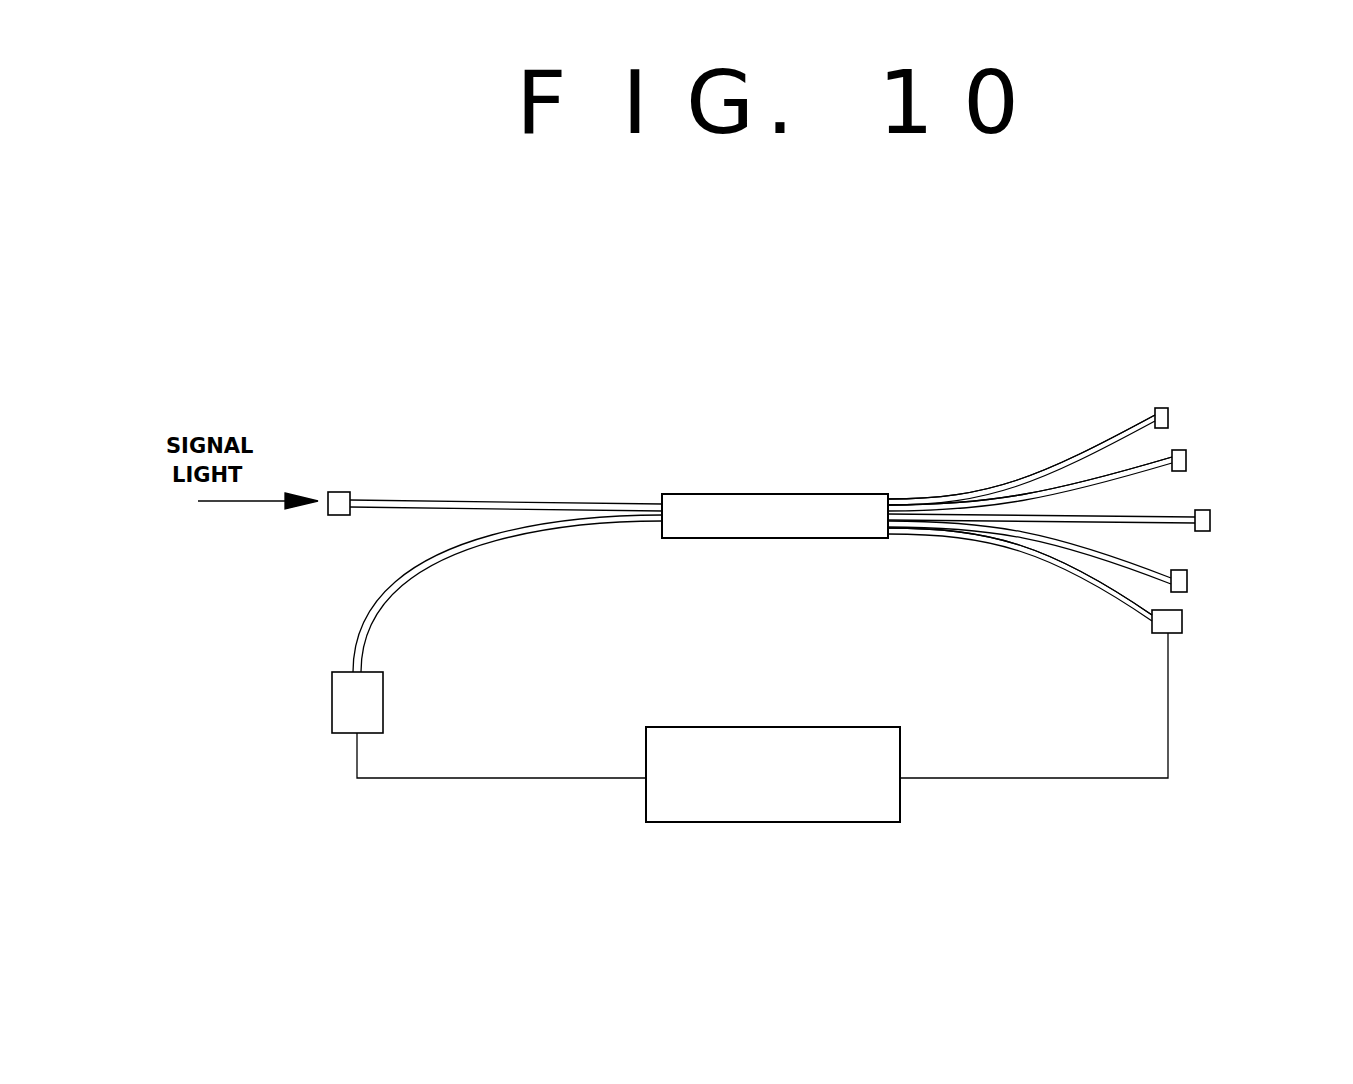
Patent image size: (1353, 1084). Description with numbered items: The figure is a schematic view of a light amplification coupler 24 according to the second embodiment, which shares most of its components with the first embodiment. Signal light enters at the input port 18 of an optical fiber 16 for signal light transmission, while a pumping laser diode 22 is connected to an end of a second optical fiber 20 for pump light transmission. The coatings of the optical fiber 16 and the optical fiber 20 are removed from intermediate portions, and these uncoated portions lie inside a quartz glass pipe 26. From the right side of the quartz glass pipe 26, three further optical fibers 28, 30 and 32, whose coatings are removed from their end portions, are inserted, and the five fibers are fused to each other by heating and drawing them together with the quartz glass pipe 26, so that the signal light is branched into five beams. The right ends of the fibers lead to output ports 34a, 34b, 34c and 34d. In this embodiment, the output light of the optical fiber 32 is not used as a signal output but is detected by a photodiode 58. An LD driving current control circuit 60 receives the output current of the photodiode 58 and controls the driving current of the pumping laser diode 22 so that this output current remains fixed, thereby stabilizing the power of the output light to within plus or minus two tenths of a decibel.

The optical fiber 16 is at (478, 500).
The input port 18 is at (348, 492).
The optical fiber 20 is at (443, 567).
The pumping laser diode 22 is at (383, 693).
The light amplification coupler 24 is at (848, 494).
The quartz glass pipe 26 is at (720, 494).
The optical fiber 28 is at (1008, 484).
The optical fiber 30 is at (1060, 486).
The optical fiber 32 is at (1010, 550).
The output port 34a is at (1211, 520).
The output port 34b is at (1188, 580).
The output port 34c is at (1170, 415).
The output port 34d is at (1187, 462).
The photodiode 58 is at (1183, 620).
The LD driving current control circuit 60 is at (773, 822).